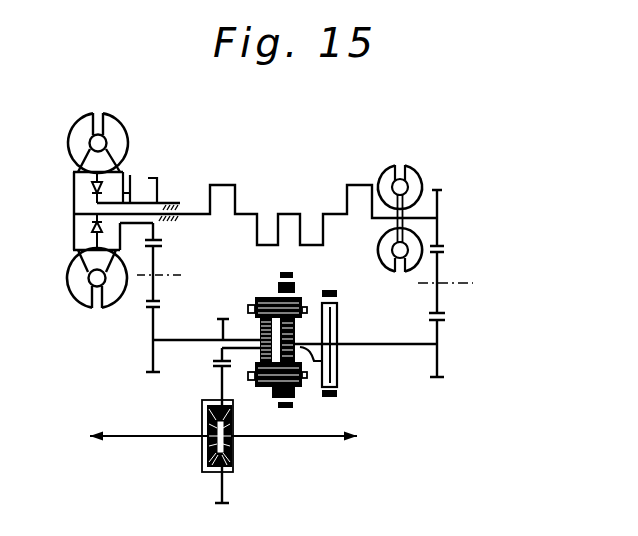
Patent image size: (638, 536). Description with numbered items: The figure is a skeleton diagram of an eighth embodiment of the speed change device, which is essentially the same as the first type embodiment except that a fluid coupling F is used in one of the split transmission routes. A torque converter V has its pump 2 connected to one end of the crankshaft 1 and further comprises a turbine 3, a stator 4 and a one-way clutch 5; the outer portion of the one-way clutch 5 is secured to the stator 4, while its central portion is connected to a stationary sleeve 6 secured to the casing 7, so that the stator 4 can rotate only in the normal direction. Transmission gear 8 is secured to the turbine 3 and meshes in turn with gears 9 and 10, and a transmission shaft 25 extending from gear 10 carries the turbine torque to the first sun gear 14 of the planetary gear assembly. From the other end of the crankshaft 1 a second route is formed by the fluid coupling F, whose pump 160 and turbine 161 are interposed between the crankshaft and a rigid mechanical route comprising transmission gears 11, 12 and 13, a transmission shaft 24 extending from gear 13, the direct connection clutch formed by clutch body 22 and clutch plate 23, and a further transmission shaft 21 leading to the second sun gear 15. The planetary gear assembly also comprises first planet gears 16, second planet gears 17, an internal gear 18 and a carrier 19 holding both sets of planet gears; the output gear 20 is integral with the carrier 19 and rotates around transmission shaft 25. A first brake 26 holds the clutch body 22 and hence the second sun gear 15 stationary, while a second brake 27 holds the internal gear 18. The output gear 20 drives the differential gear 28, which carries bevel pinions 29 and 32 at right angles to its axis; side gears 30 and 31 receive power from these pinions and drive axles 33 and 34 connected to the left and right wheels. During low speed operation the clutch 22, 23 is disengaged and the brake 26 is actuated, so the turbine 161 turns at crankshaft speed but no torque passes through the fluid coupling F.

The crankshaft 1 is at (197, 208).
The pump 2 is at (79, 125).
The turbine 3 is at (119, 128).
The stator 4 is at (88, 170).
The one-way clutch 5 is at (92, 189).
The stationary sleeve 6 is at (131, 178).
The casing 7 is at (170, 203).
The transmission gear 8 is at (158, 176).
The transmission gear 9 is at (160, 302).
The transmission gear 10 is at (148, 307).
The transmission gear 11 is at (442, 200).
The transmission gear 12 is at (441, 265).
The transmission gear 13 is at (439, 335).
The first sun gear 14 is at (246, 316).
The second sun gear 15 is at (338, 339).
The first planet gears 16 is at (262, 297).
The second planet gears 17 is at (299, 295).
The internal gear 18 is at (305, 283).
The carrier 19 is at (252, 300).
The output gear 20 is at (219, 319).
The transmission shaft 21 is at (338, 360).
The clutch body 22 is at (341, 304).
The clutch plate 23 is at (338, 318).
The transmission shaft 24 is at (404, 344).
The transmission shaft 25 is at (205, 339).
The first brake 26 is at (327, 290).
The second brake 27 is at (288, 271).
The gear 28 is at (219, 380).
The bevel pinion 29 is at (202, 400).
The side gear 30 is at (202, 428).
The side gear 31 is at (237, 418).
The bevel pinion 32 is at (224, 467).
The axle 33 is at (131, 438).
The axle 34 is at (328, 440).
The pump 160 is at (398, 174).
The turbine 161 is at (416, 180).
The fluid coupling F is at (403, 183).
The torque converter V is at (110, 112).